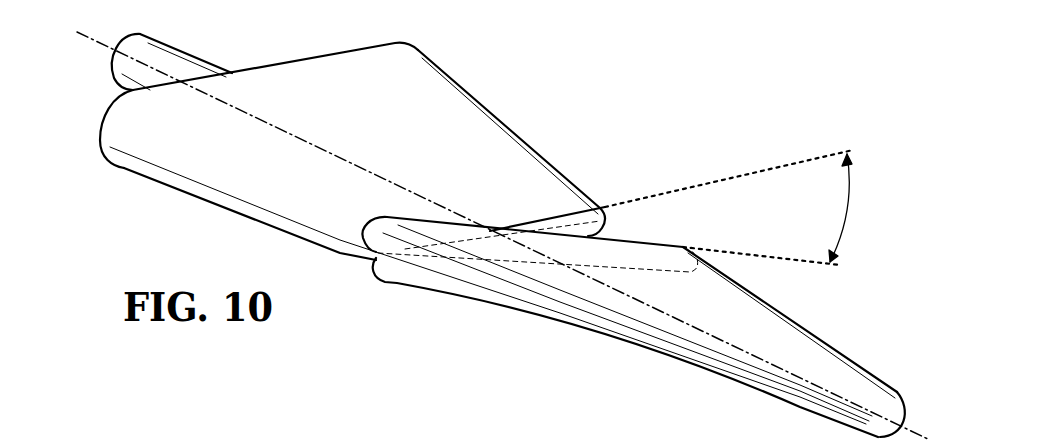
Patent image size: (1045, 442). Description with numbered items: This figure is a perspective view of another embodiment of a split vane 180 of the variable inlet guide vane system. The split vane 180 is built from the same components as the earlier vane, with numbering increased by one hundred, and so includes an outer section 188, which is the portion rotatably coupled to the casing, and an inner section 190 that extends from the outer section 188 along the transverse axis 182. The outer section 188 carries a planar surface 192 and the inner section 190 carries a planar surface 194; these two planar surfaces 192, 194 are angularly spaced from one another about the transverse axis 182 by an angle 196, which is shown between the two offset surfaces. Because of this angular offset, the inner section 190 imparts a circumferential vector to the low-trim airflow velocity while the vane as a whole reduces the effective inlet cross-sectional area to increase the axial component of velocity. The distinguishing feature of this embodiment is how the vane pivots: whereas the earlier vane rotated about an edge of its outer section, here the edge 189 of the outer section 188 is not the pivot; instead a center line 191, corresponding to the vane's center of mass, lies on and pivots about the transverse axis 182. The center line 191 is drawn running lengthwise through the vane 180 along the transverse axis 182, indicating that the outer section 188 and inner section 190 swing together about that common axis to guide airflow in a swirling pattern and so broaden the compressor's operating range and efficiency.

The split vane 180 is at (92, 110).
The transverse axis 182 is at (912, 436).
The outer section 188 is at (392, 45).
The edge 189 is at (245, 222).
The inner section 190 is at (810, 328).
The center line 191 is at (342, 160).
The planar surface 192 is at (253, 164).
The planar surface 194 is at (725, 309).
The angle 196 is at (848, 204).